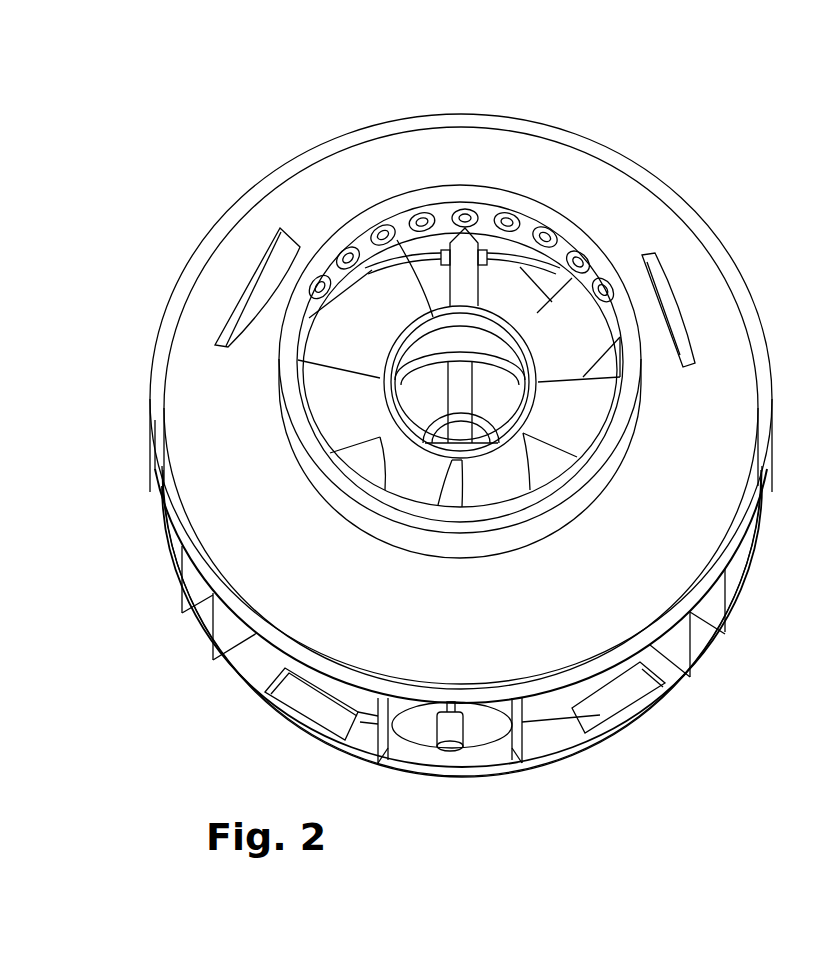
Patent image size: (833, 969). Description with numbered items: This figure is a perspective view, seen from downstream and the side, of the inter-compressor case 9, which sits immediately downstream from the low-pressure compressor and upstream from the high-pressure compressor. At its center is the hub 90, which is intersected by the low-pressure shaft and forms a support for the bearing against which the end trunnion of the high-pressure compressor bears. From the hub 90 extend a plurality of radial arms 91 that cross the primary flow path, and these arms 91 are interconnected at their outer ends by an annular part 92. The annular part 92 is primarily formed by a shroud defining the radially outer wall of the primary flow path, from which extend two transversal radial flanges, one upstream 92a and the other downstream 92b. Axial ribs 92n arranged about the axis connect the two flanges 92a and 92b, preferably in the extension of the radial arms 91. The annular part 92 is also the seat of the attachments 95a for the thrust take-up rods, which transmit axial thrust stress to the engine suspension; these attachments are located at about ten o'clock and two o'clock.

The inter-compressor case 9 is at (703, 732).
The hub 90 is at (393, 245).
The radial arms 91 is at (572, 325).
The annular part 92 is at (717, 320).
The upstream radial flange 92a is at (470, 783).
The downstream radial flange 92b is at (377, 660).
The axial ribs 92n is at (727, 617).
The attachments for the thrust take-up rods 95a is at (273, 270).